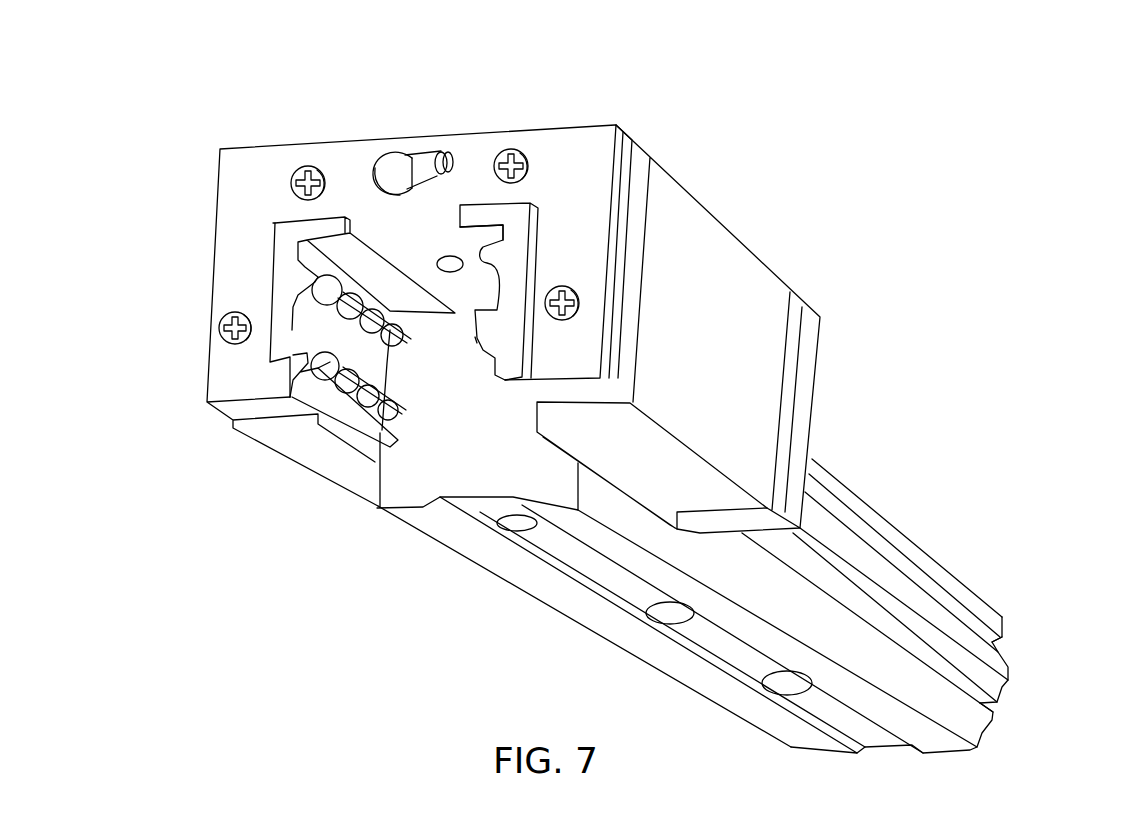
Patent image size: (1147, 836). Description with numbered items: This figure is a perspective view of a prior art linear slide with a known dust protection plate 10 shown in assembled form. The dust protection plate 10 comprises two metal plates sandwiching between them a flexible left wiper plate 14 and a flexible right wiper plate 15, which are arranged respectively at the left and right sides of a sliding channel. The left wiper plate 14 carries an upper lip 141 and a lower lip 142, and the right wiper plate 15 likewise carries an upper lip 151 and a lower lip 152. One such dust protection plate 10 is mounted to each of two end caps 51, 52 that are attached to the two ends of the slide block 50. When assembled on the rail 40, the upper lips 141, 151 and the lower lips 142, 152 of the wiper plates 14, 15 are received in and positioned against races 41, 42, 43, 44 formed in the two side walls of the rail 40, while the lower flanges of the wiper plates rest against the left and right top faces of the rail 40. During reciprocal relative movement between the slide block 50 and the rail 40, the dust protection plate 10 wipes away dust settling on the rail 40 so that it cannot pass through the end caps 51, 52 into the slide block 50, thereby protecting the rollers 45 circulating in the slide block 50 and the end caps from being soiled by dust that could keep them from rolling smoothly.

The dust protection plate 10 is at (580, 153).
The left wiper plate 14 is at (293, 282).
The upper lip 141 is at (303, 266).
The lower lip 142 is at (293, 355).
The right wiper plate 15 is at (522, 263).
The upper lip 151 is at (483, 263).
The lower lip 152 is at (475, 337).
The rail 40 is at (963, 587).
The race 41 is at (1003, 643).
The race 42 is at (998, 709).
The race 43 is at (400, 302).
The race 44 is at (392, 432).
The rollers 45 is at (402, 305).
The slide block 50 is at (727, 250).
The end cap 51 is at (640, 180).
The end cap 52 is at (793, 340).